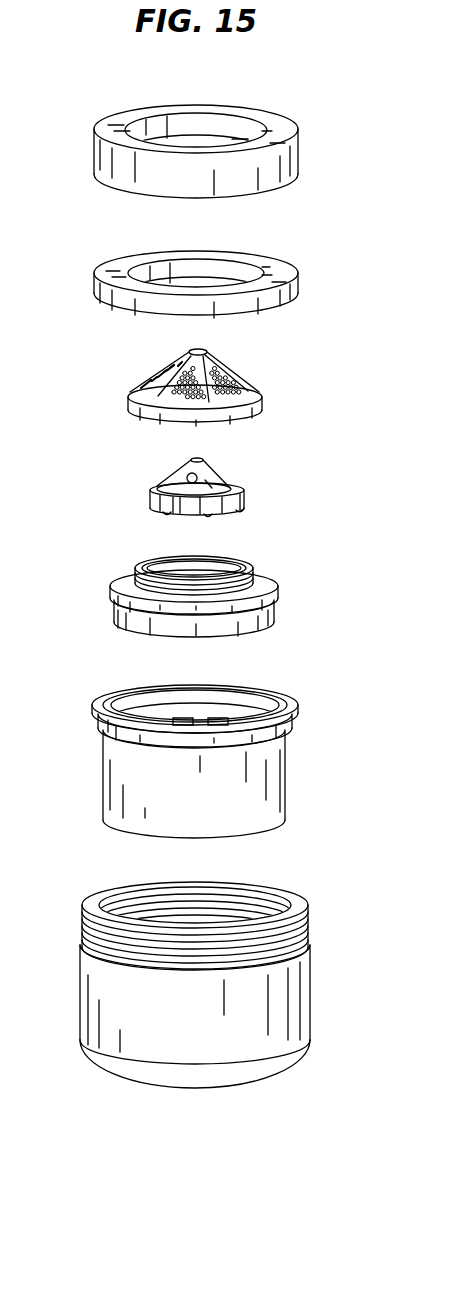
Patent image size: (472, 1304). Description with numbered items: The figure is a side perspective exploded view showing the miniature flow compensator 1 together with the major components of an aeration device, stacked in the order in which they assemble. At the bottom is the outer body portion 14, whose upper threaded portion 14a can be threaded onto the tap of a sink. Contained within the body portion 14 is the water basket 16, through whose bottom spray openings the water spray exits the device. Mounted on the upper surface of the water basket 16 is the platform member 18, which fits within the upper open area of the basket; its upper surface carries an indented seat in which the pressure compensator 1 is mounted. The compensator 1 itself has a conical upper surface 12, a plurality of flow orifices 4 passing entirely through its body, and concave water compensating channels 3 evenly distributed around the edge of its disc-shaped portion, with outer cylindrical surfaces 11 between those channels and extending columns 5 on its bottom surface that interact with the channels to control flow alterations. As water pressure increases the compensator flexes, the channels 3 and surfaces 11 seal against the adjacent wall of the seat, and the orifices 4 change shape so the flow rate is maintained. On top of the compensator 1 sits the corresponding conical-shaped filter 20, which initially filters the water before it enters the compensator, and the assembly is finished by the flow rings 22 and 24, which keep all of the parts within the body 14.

The flow compensator 1 is at (142, 479).
The water compensating channels 3 is at (187, 510).
The flow orifices 4 is at (188, 473).
The extending columns 5 is at (163, 512).
The outer cylindrical surfaces 11 is at (244, 500).
The upper surface 12 is at (220, 470).
The outer body portion 14 is at (310, 1000).
The upper threaded portion 14a is at (308, 920).
The water basket 16 is at (287, 768).
The platform member 18 is at (280, 593).
The conical-shaped filter 20 is at (247, 382).
The flow ring 22 is at (298, 290).
The flow ring 24 is at (298, 148).